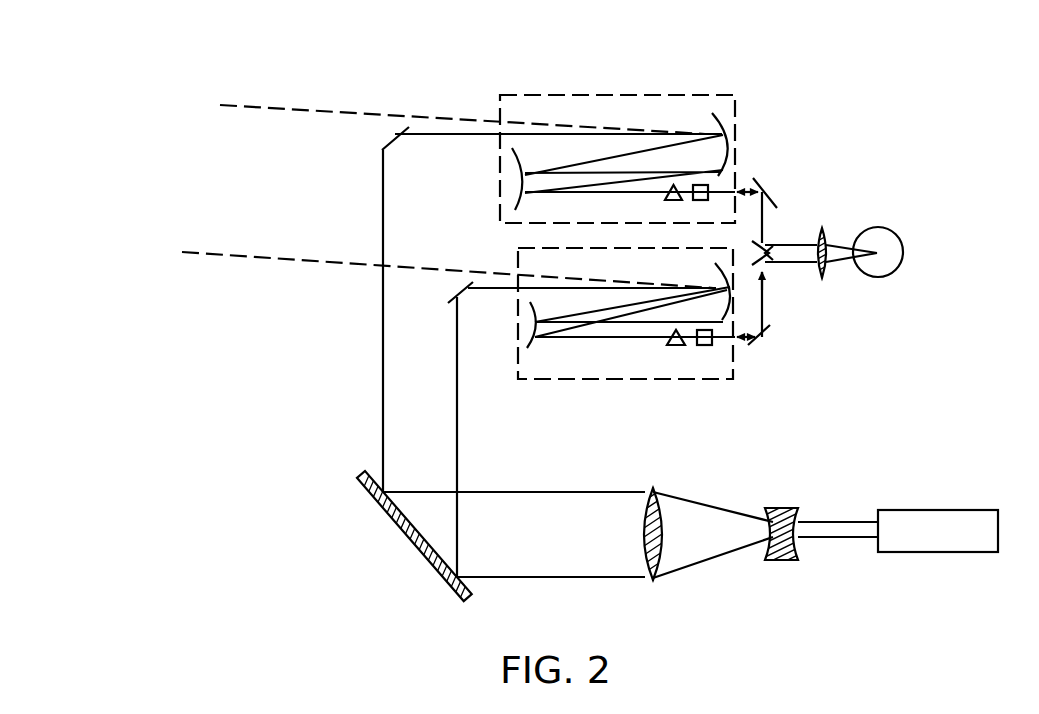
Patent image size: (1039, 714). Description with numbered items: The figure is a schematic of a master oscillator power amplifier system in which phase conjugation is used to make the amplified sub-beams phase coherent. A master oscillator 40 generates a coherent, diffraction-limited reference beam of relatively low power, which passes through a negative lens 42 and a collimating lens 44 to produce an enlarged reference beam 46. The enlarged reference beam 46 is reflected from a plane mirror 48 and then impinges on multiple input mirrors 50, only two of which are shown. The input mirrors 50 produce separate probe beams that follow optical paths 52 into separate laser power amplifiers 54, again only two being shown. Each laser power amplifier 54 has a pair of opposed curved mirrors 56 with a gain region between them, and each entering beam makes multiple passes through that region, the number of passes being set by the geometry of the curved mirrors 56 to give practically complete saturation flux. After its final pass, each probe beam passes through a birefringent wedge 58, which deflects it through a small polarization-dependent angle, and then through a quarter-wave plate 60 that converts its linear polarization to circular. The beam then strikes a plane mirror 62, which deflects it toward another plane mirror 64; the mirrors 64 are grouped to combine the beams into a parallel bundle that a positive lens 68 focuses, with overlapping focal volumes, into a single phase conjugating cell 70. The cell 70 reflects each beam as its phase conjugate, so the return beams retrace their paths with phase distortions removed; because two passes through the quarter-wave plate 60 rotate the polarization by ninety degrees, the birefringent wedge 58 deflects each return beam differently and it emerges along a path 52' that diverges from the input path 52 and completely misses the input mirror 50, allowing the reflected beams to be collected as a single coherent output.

The master oscillator 40 is at (934, 533).
The negative lens 42 is at (773, 562).
The collimating lens 44 is at (659, 486).
The enlarged reference beam 46 is at (505, 487).
The plane mirror 48 is at (376, 511).
The input mirrors 50 is at (382, 139).
The optical paths 52 is at (498, 355).
The path 52' is at (447, 158).
The laser power amplifier 54 is at (541, 89).
The curved mirrors 56 is at (514, 182).
The birefringent wedge 58 is at (675, 349).
The quarter-wave plate 60 is at (714, 347).
The plane mirror 62 is at (779, 197).
The plane mirror 64 is at (784, 275).
The positive lens 68 is at (826, 226).
The phase conjugating cell 70 is at (888, 224).